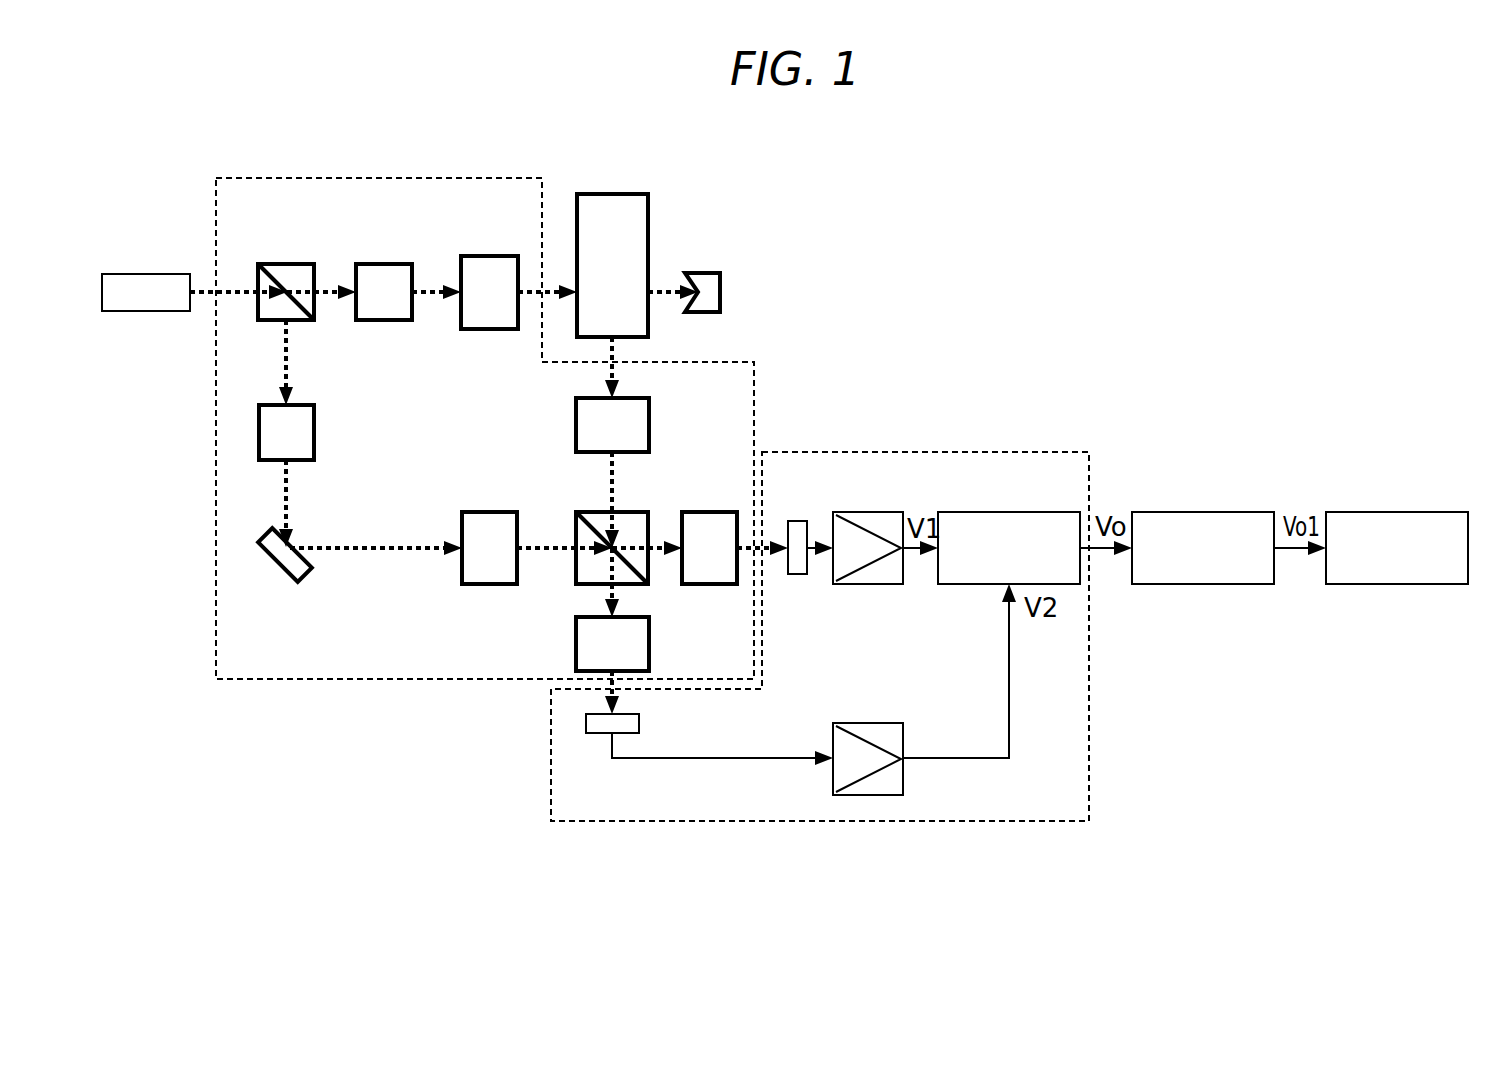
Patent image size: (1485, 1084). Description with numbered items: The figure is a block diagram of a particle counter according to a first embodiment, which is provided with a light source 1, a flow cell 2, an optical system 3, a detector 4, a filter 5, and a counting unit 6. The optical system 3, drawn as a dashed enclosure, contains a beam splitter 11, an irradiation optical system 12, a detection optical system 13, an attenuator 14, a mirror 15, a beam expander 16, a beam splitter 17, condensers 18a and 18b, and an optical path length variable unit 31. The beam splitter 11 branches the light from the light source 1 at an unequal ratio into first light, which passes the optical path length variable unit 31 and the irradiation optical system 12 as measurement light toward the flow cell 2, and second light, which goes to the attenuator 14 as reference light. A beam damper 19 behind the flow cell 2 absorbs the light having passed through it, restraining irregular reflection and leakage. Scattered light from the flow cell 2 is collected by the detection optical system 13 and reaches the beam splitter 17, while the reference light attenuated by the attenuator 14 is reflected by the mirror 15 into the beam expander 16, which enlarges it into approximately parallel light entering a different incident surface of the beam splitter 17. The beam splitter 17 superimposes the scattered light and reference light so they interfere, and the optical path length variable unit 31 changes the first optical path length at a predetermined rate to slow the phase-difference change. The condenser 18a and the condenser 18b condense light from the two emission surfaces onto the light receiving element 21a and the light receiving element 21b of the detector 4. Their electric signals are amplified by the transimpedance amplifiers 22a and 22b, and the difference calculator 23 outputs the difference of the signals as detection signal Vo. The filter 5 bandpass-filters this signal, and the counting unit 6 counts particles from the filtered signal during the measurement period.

The light source 1 is at (155, 273).
The flow cell 2 is at (650, 253).
The optical system 3 is at (754, 432).
The detector 4 is at (1045, 451).
The filter 5 is at (1250, 512).
The counting unit 6 is at (1440, 512).
The beam splitter 11 is at (295, 264).
The irradiation optical system 12 is at (492, 255).
The detection optical system 13 is at (575, 423).
The attenuator 14 is at (305, 405).
The mirror 15 is at (280, 565).
The beam expander 16 is at (490, 512).
The beam splitter 17 is at (628, 512).
The condenser 18a is at (708, 512).
The condenser 18b is at (650, 640).
The beam damper 19 is at (710, 272).
The light receiving element 21a is at (797, 521).
The light receiving element 21b is at (640, 722).
The amplifier 22a is at (878, 512).
The amplifier 22b is at (882, 723).
The difference calculator 23 is at (1035, 512).
The optical path length variable unit 31 is at (383, 265).